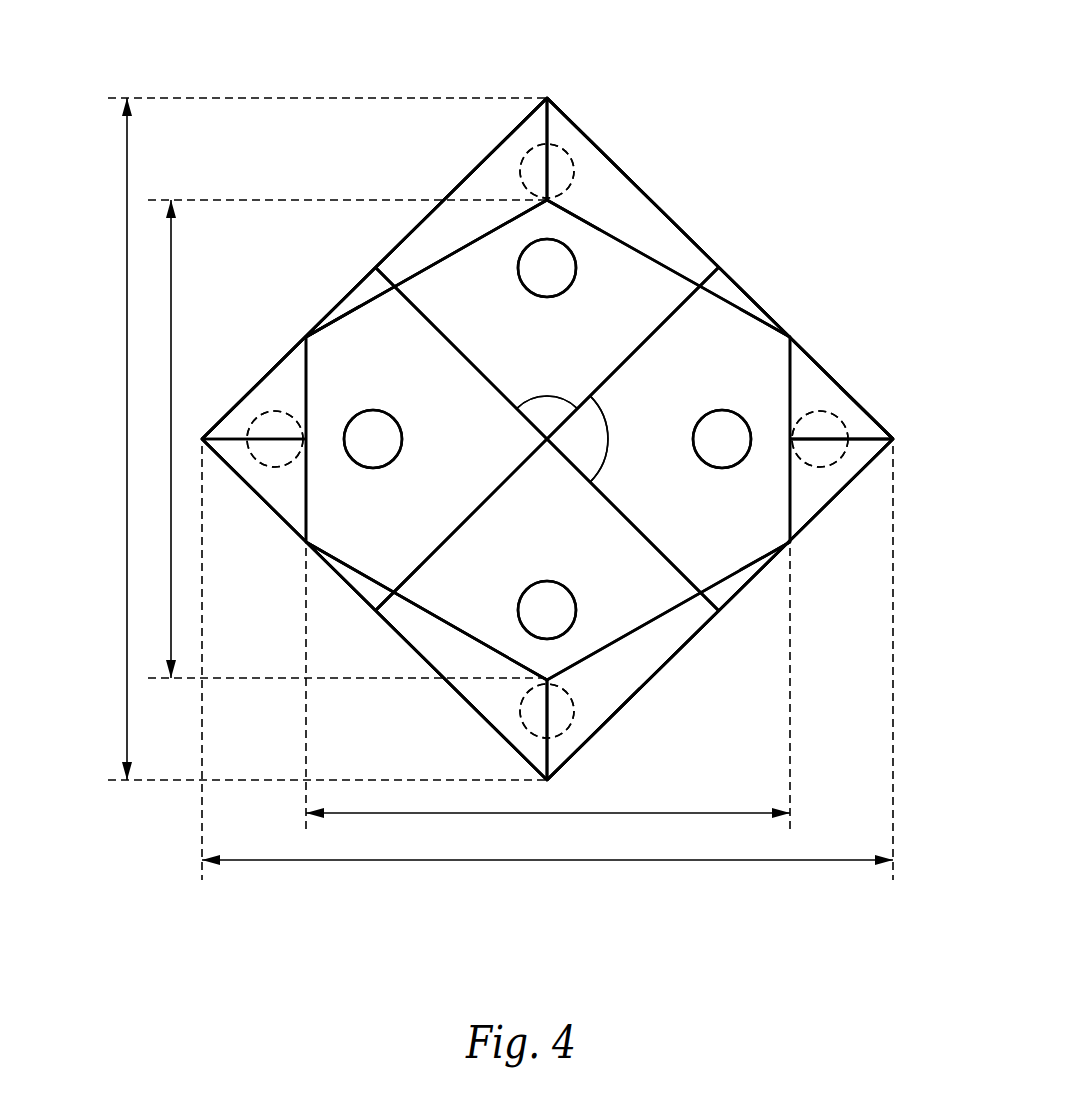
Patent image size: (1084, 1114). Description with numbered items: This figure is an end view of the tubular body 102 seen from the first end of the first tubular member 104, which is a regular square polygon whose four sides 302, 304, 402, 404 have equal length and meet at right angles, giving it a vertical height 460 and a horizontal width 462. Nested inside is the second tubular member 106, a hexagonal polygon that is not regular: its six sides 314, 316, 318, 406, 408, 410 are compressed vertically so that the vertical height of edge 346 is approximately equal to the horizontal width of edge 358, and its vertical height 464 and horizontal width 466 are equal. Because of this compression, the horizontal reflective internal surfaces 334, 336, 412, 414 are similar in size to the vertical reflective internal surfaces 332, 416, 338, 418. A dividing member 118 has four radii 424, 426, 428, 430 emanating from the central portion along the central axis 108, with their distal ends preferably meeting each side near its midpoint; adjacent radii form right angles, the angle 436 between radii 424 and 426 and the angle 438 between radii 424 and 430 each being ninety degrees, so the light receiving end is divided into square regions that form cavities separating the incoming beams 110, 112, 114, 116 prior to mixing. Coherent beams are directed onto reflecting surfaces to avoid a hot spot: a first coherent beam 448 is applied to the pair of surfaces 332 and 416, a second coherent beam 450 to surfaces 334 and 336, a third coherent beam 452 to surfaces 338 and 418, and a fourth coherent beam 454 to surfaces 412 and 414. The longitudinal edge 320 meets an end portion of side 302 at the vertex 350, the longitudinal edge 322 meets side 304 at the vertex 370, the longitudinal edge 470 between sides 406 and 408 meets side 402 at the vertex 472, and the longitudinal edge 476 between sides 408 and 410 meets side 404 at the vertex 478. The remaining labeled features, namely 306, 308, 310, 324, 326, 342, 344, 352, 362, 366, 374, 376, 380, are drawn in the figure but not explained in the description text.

The tubular body 102 is at (80, 162).
The first tubular member 104 is at (358, 265).
The second tubular member 106 is at (417, 255).
The central axis 108 is at (540, 438).
The incoming beam 110 is at (517, 262).
The incoming beam 112 is at (745, 418).
The incoming beam 114 is at (519, 627).
The incoming beam 116 is at (365, 411).
The dividing member 118 is at (722, 278).
The side 302 is at (691, 238).
The side 304 is at (748, 582).
The right corner 306 is at (894, 441).
The top corner 308 is at (547, 97).
The bottom corner 310 is at (548, 781).
The side 314 is at (584, 218).
The side 316 is at (795, 524).
The side 318 is at (703, 627).
The longitudinal edge 320 is at (791, 336).
The longitudinal edge 322 is at (791, 544).
The top joint 324 is at (549, 199).
The lower right edge 326 is at (607, 720).
The vertical reflective internal surface 332 is at (643, 215).
The horizontal reflective internal surface 334 is at (860, 403).
The horizontal reflective internal surface 336 is at (820, 492).
The vertical reflective internal surface 338 is at (647, 660).
The first side 342 is at (720, 268).
The first face 344 is at (668, 268).
The edge 346 is at (549, 122).
The vertex 350 is at (765, 323).
The top joint 352 is at (573, 215).
The edge 358 is at (873, 430).
The right upper triangle 362 is at (857, 415).
The second side 366 is at (720, 609).
The vertex 370 is at (765, 556).
The lower right side 374 is at (720, 609).
The bottom fold line 376 is at (550, 752).
The lower right edge 380 is at (593, 734).
The side 402 is at (471, 170).
The side 404 is at (343, 578).
The side 406 is at (353, 310).
The side 408 is at (302, 515).
The side 410 is at (433, 618).
The horizontal reflective internal surface 412 is at (231, 423).
The horizontal reflective internal surface 414 is at (263, 482).
The vertical reflective internal surface 416 is at (474, 184).
The vertical reflective internal surface 418 is at (455, 657).
The radius 424 is at (628, 357).
The radius 426 is at (660, 551).
The radius 428 is at (453, 530).
The radius 430 is at (447, 337).
The angle 436 is at (608, 450).
The angle 438 is at (549, 394).
The first coherent beam 448 is at (527, 152).
The second coherent beam 450 is at (840, 460).
The third coherent beam 452 is at (527, 730).
The fourth coherent beam 454 is at (260, 412).
The vertical height 460 is at (127, 320).
The horizontal width 462 is at (470, 862).
The vertical height 464 is at (171, 509).
The horizontal width 466 is at (490, 815).
The longitudinal edge 470 is at (305, 337).
The vertex 472 is at (333, 321).
The longitudinal edge 476 is at (372, 613).
The vertex 478 is at (398, 588).